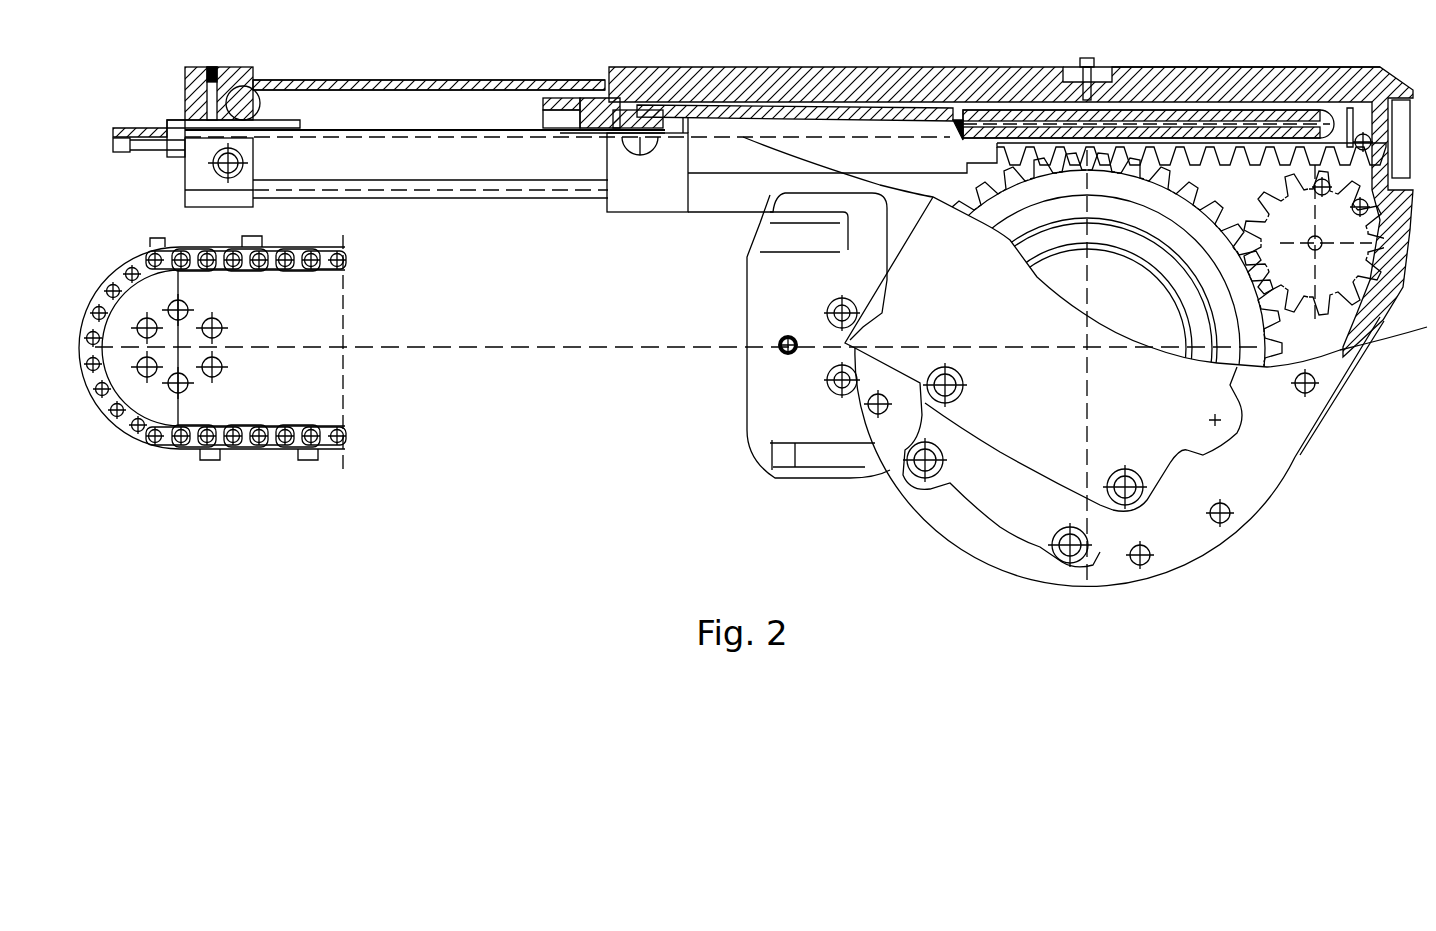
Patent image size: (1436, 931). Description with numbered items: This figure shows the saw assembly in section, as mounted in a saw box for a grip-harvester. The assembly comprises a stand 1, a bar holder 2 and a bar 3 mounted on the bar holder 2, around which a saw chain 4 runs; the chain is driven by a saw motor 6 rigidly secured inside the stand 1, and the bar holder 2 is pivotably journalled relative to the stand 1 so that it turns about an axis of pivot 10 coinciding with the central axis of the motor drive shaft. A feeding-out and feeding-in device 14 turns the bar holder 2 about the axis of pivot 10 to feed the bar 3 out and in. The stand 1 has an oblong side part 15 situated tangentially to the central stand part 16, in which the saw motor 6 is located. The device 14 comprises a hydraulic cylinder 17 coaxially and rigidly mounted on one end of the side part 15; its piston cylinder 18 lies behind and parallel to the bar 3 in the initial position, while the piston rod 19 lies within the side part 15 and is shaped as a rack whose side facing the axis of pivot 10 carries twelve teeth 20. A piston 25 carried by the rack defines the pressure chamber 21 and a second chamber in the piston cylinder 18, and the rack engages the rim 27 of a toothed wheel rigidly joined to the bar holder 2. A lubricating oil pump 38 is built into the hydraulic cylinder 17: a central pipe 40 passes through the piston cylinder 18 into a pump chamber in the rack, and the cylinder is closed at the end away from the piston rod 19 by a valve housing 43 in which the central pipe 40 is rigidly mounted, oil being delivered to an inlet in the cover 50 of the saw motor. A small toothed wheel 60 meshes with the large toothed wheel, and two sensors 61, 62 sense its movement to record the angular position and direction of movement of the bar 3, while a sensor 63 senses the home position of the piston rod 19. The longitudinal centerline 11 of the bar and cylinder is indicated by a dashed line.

The stand 1 is at (1193, 65).
The bar holder 2 is at (840, 463).
The bar 3 is at (268, 415).
The saw chain 4 is at (172, 447).
The saw motor 6 is at (1042, 470).
The axis of pivot 10 is at (1094, 350).
The longitudinal axis 11 is at (464, 352).
The feeding-out and feeding-in device 14 is at (935, 58).
The oblong side part 15 is at (1250, 67).
The central stand part 16 is at (1357, 368).
The hydraulic cylinder 17 is at (422, 82).
The piston cylinder 18 is at (477, 82).
The piston rod 19 is at (879, 103).
The teeth 20 is at (1055, 178).
The pressure chamber 21 is at (306, 84).
The piston 25 is at (566, 95).
The rim 27 is at (984, 216).
The lubricating oil pump 38 is at (372, 126).
The central pipe 40 is at (433, 130).
The valve housing 43 is at (255, 70).
The cover 50 is at (1020, 447).
The small toothed wheel 60 is at (1310, 300).
The sensor 61 is at (1290, 172).
The sensor 62 is at (1366, 200).
The sensor 63 is at (1350, 112).